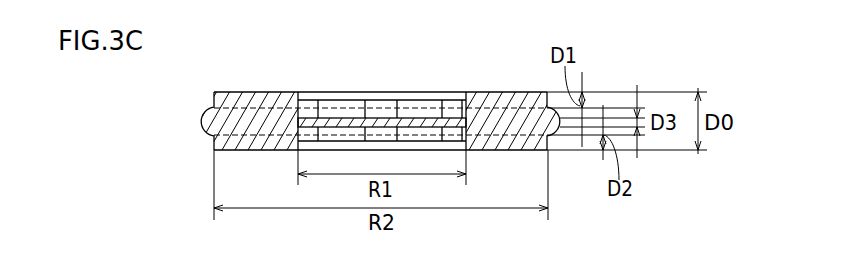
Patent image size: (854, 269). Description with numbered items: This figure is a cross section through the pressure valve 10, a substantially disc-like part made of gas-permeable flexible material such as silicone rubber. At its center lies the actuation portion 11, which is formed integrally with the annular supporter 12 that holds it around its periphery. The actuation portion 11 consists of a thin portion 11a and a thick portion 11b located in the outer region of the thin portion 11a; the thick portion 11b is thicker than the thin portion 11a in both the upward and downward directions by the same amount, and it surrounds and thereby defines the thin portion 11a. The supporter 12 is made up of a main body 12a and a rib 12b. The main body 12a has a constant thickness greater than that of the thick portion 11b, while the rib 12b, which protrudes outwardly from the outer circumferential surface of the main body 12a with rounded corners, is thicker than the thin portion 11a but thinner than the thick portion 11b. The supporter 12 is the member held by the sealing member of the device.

The pressure valve 10 is at (432, 90).
The actuation portion 11 is at (382, 79).
The thin portion 11a is at (349, 122).
The thick portion 11b is at (432, 130).
The annular supporter 12 is at (339, 127).
The main body 12a is at (214, 96).
The rib 12b is at (209, 124).